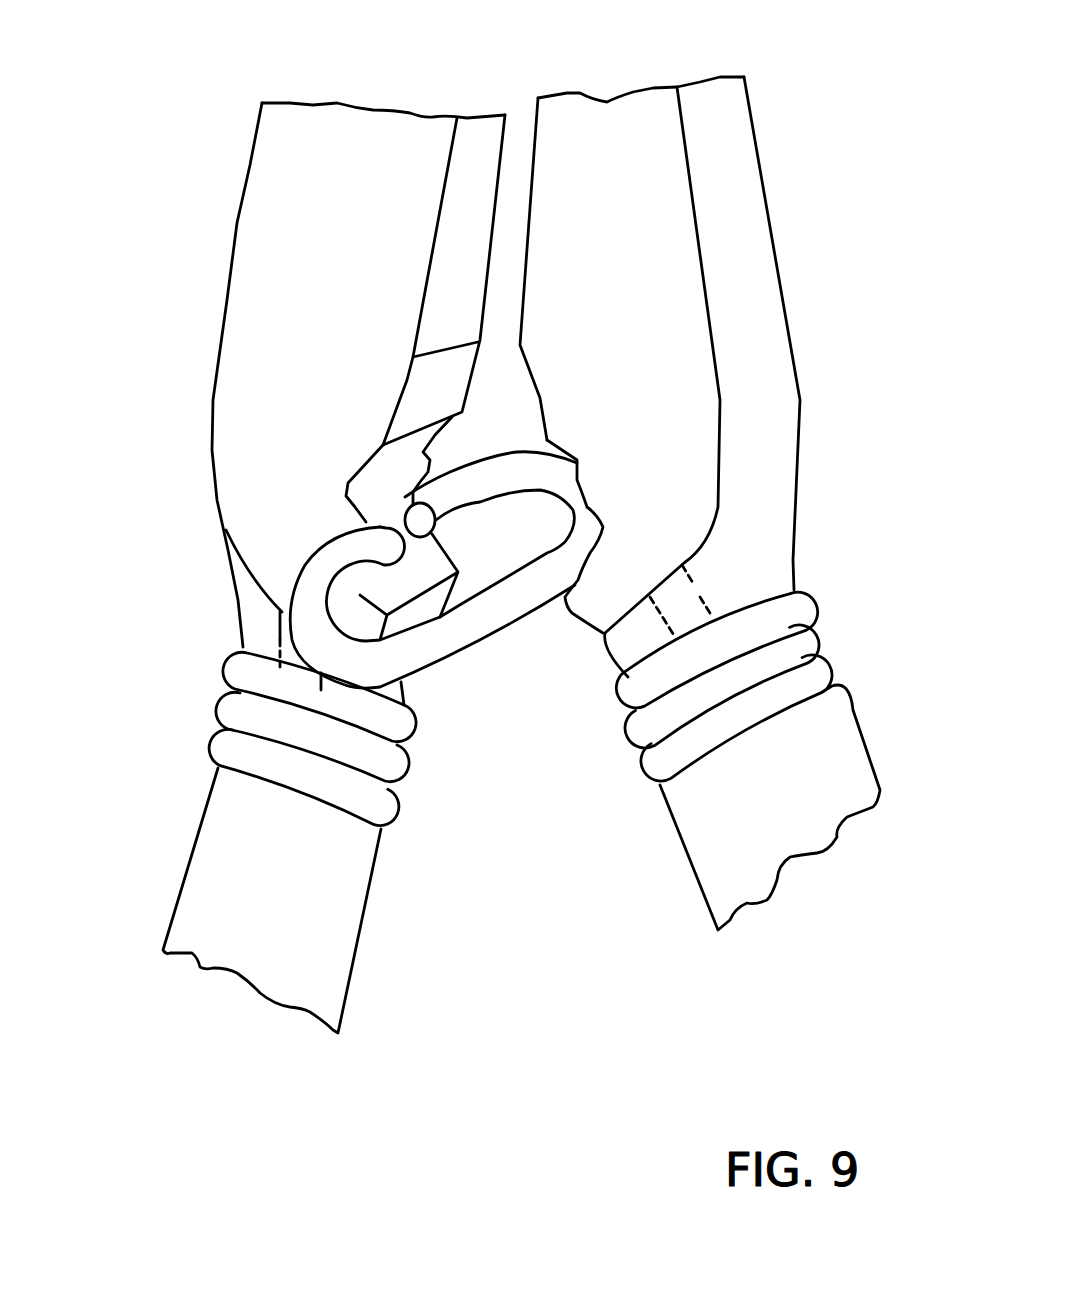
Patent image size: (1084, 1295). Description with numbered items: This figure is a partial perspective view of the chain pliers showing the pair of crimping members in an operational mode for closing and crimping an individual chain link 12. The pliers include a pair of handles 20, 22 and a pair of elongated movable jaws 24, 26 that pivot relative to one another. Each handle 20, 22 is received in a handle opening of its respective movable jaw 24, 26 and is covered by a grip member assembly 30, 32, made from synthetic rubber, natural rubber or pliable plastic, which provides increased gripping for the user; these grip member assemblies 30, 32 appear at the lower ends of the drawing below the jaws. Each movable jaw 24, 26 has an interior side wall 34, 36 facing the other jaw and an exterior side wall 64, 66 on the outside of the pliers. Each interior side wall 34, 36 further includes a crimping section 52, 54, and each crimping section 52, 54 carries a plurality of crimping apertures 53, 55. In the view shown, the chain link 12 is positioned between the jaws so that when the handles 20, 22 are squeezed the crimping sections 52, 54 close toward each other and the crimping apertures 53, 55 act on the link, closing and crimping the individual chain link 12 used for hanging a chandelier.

The chain link 12 is at (465, 626).
The handle 20 is at (291, 657).
The handle 22 is at (690, 596).
The movable jaw 24 is at (255, 317).
The movable jaw 26 is at (647, 356).
The grip member assembly 30 is at (230, 843).
The grip member assembly 32 is at (785, 760).
The interior side wall 34 is at (453, 237).
The interior side wall 36 is at (508, 240).
The crimping section 52 is at (360, 517).
The crimping apertures 53 is at (400, 497).
The crimping section 54 is at (597, 492).
The crimping apertures 55 is at (575, 462).
The exterior side wall 64 is at (237, 223).
The exterior side wall 66 is at (740, 255).